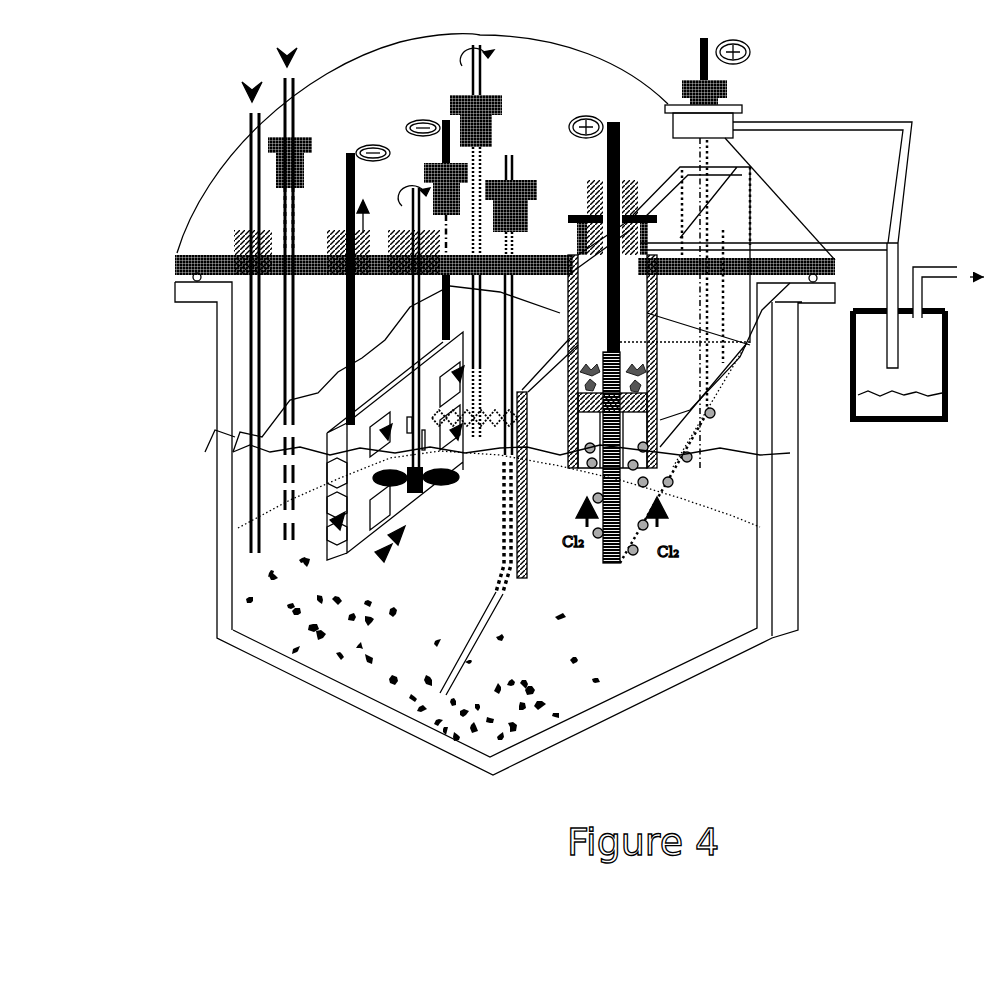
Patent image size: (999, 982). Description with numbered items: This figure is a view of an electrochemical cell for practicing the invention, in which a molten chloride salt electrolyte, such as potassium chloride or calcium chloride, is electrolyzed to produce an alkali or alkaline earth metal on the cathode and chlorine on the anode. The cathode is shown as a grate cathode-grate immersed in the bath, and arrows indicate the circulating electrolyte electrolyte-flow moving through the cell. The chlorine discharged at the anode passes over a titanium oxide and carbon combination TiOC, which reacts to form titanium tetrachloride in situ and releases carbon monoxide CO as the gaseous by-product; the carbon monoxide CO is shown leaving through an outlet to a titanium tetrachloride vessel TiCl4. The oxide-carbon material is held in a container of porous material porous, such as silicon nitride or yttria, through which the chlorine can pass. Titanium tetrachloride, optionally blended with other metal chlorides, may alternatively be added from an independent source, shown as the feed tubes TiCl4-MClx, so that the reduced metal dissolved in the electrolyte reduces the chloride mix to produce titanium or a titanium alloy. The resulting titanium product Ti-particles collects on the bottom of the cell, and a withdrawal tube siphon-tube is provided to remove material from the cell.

The cathode grate cathode-grate is at (327, 527).
The electrolyte flow electrolyte-flow is at (397, 547).
The Ti particles Ti-particles is at (430, 700).
The siphon tube siphon-tube is at (487, 622).
The porous Si3N4 or Y2O3 tube porous is at (540, 548).
The element TiOC is at (657, 373).
The TiCl4 container TiCl4 is at (905, 416).
The CO outlet CO is at (951, 284).
The TiCl4 + MClx feed tubes TiCl4-MClx is at (265, 292).